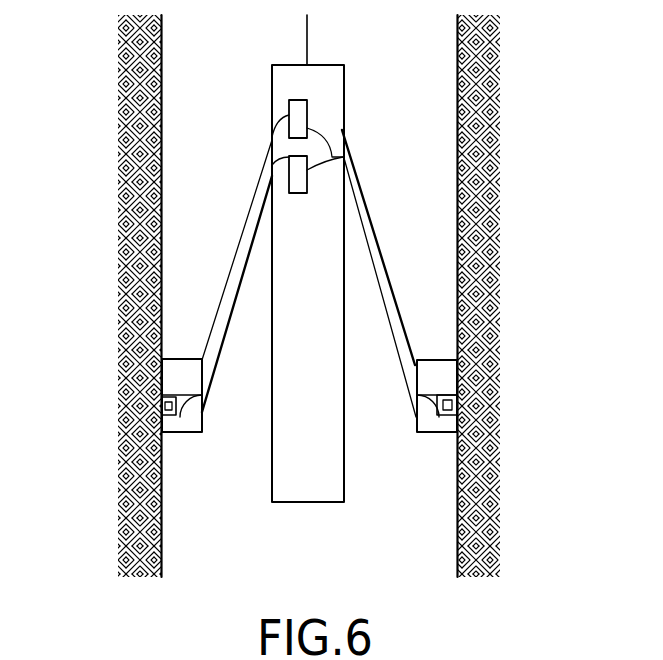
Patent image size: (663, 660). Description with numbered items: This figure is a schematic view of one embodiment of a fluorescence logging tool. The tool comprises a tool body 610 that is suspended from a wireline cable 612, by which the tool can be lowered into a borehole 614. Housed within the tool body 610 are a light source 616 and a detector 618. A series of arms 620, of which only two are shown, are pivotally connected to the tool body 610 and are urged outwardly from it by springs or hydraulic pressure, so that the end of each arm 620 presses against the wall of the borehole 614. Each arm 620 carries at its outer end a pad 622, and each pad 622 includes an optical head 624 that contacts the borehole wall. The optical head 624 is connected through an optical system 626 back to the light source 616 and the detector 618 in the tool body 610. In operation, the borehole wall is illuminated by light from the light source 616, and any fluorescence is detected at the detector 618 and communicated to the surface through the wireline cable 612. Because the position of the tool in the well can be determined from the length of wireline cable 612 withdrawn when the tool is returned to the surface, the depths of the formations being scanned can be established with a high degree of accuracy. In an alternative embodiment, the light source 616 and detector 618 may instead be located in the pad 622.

The tool body 610 is at (335, 406).
The wireline cable 612 is at (307, 32).
The borehole 614 is at (232, 207).
The light source 616 is at (298, 117).
The detector 618 is at (300, 188).
The arm 620 is at (231, 282).
The pad 622 is at (176, 363).
The optical head 624 is at (168, 399).
The optical system 626 is at (273, 66).